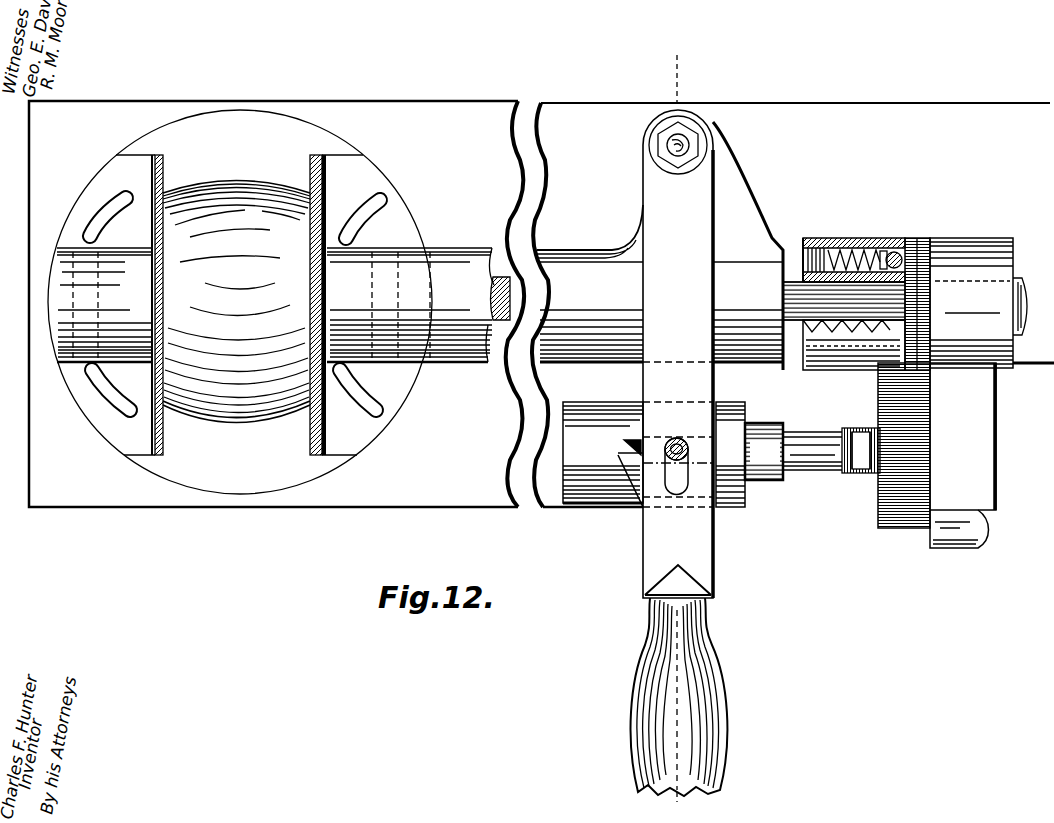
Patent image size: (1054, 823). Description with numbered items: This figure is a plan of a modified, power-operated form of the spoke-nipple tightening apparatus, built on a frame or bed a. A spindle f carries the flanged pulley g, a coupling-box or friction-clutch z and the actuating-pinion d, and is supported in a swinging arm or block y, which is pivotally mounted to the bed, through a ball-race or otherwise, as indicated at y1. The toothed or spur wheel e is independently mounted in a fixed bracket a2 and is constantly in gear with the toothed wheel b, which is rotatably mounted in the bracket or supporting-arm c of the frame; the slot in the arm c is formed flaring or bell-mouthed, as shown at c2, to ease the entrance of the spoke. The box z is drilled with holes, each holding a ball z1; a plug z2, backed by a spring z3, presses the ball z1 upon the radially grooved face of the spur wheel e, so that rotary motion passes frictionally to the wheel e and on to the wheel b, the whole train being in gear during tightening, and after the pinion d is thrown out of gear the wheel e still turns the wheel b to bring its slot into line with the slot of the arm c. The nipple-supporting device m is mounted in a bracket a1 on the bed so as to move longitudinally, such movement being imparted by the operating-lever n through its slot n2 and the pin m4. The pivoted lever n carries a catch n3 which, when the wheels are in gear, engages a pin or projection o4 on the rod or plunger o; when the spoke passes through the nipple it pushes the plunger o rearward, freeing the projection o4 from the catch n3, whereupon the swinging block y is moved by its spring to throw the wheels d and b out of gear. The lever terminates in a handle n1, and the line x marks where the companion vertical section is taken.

The frame a is at (541, 304).
The bracket a1 is at (738, 508).
The fixed bracket a2 is at (978, 303).
The toothed wheel b is at (878, 493).
The bracket or supporting-arm c is at (963, 436).
The flaring or bell-mouthed slot portion c2 is at (963, 522).
The actuating-pinion d is at (905, 242).
The toothed or spur wheel e is at (921, 242).
The spindle f is at (794, 288).
The flanged pulley g is at (236, 302).
The nipple-supporting device m is at (812, 485).
The pin m4 is at (680, 440).
The operating-lever n is at (678, 354).
The handle n1 is at (688, 700).
The slot n2 is at (675, 474).
The catch n3 is at (622, 480).
The rod or plunger o is at (852, 430).
The pin or projection o4 is at (626, 448).
The section line x is at (672, 422).
The swinging arm or block y is at (415, 302).
The pivot mounting y1 is at (357, 390).
The coupling-box or friction-clutch z is at (797, 358).
The ball z1 is at (890, 252).
The plug z2 is at (862, 247).
The spring z3 is at (826, 243).